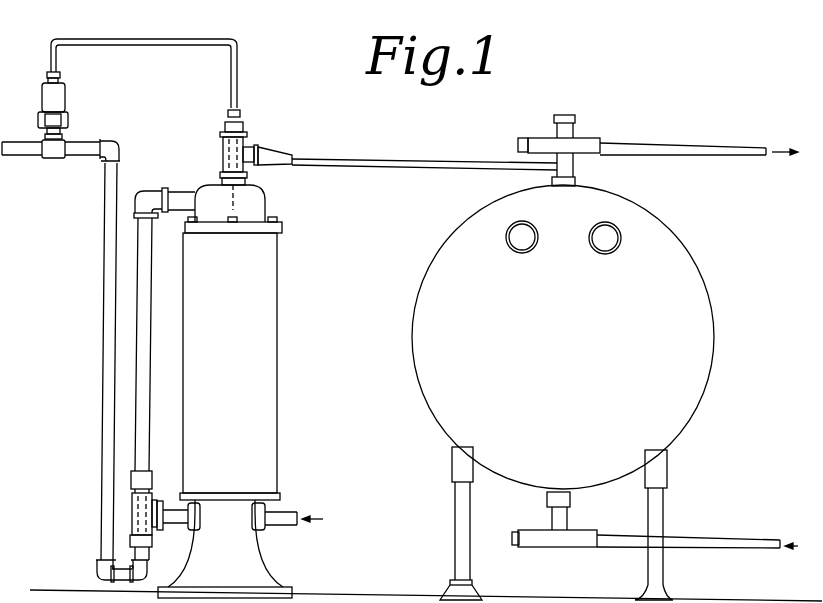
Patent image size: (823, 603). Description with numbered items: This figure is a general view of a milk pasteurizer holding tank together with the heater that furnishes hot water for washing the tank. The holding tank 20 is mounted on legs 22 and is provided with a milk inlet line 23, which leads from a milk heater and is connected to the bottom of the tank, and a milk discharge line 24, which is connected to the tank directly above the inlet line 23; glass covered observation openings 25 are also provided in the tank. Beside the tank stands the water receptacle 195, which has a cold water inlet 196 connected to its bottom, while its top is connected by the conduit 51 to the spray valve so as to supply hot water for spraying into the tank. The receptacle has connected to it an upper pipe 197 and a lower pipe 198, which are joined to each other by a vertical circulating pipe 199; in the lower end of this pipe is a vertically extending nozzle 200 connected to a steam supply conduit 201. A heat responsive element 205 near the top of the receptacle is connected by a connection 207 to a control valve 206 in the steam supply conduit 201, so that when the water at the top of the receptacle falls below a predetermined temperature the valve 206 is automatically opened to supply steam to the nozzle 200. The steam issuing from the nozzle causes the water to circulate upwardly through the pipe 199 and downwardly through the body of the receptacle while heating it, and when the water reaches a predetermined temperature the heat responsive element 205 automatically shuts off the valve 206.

The holding tank 20 is at (725, 314).
The legs 22 is at (455, 512).
The milk inlet line 23 is at (728, 527).
The milk discharge line 24 is at (648, 143).
The glass covered observation openings 25 is at (527, 238).
The conduit 51 is at (350, 160).
The water receptacle 195 is at (279, 362).
The cold water inlet 196 is at (288, 512).
The upper pipe 197 is at (182, 192).
The lower pipe 198 is at (176, 526).
The vertical circulating pipe 199 is at (138, 376).
The nozzle 200 is at (132, 517).
The steam supply conduit 201 is at (104, 292).
The heat responsive element 205 is at (240, 207).
The control valve 206 is at (47, 158).
The connection 207 is at (212, 36).